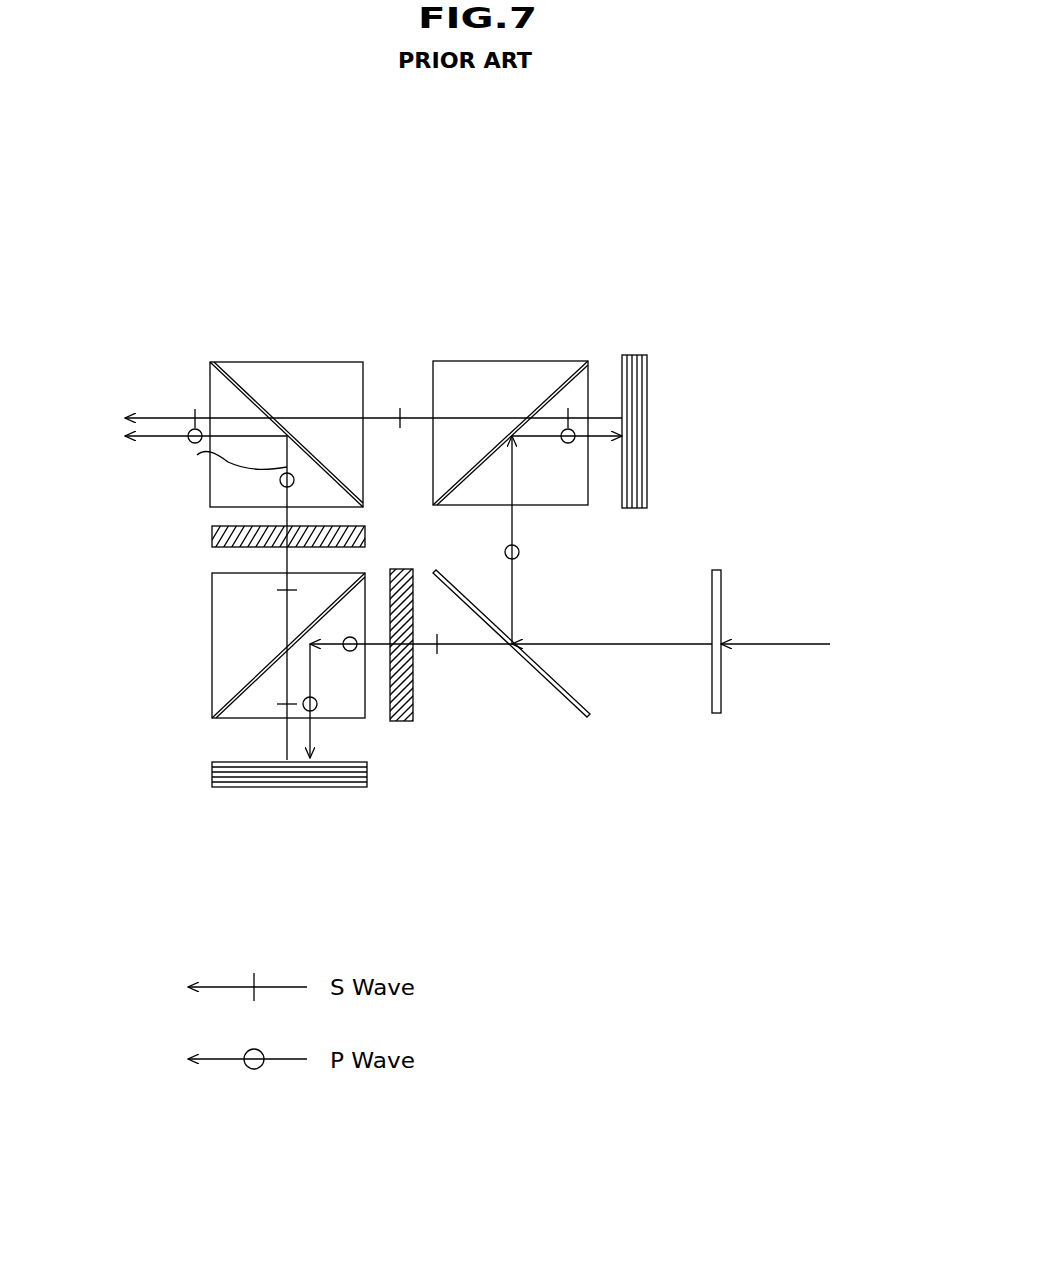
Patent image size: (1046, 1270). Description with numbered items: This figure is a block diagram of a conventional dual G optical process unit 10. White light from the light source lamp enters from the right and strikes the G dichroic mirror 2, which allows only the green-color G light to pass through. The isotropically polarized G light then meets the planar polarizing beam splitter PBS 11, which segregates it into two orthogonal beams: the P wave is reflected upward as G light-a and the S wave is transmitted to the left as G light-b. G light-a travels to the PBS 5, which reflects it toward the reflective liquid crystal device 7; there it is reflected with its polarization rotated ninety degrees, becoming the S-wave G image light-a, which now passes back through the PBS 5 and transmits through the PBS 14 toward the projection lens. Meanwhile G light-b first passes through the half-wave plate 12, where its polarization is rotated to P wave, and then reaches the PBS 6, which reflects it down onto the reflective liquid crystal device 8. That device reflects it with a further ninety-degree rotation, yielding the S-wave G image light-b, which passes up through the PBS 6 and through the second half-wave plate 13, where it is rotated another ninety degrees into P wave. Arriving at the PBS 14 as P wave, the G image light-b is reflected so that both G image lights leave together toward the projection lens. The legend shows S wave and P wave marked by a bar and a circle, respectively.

The dual G optical process unit 10 is at (664, 170).
The polarizing beam splitter PBS 14 is at (283, 362).
The PBS 5 is at (455, 361).
The reflective liquid crystal device 7 is at (650, 392).
The half-wave plate 13 is at (208, 537).
The PBS 6 is at (212, 697).
The half-wave plate 12 is at (415, 697).
The reflective liquid crystal device 8 is at (310, 787).
The polarizing beam splitter PBS 11 is at (540, 676).
The G dichroic mirror 2 is at (722, 590).